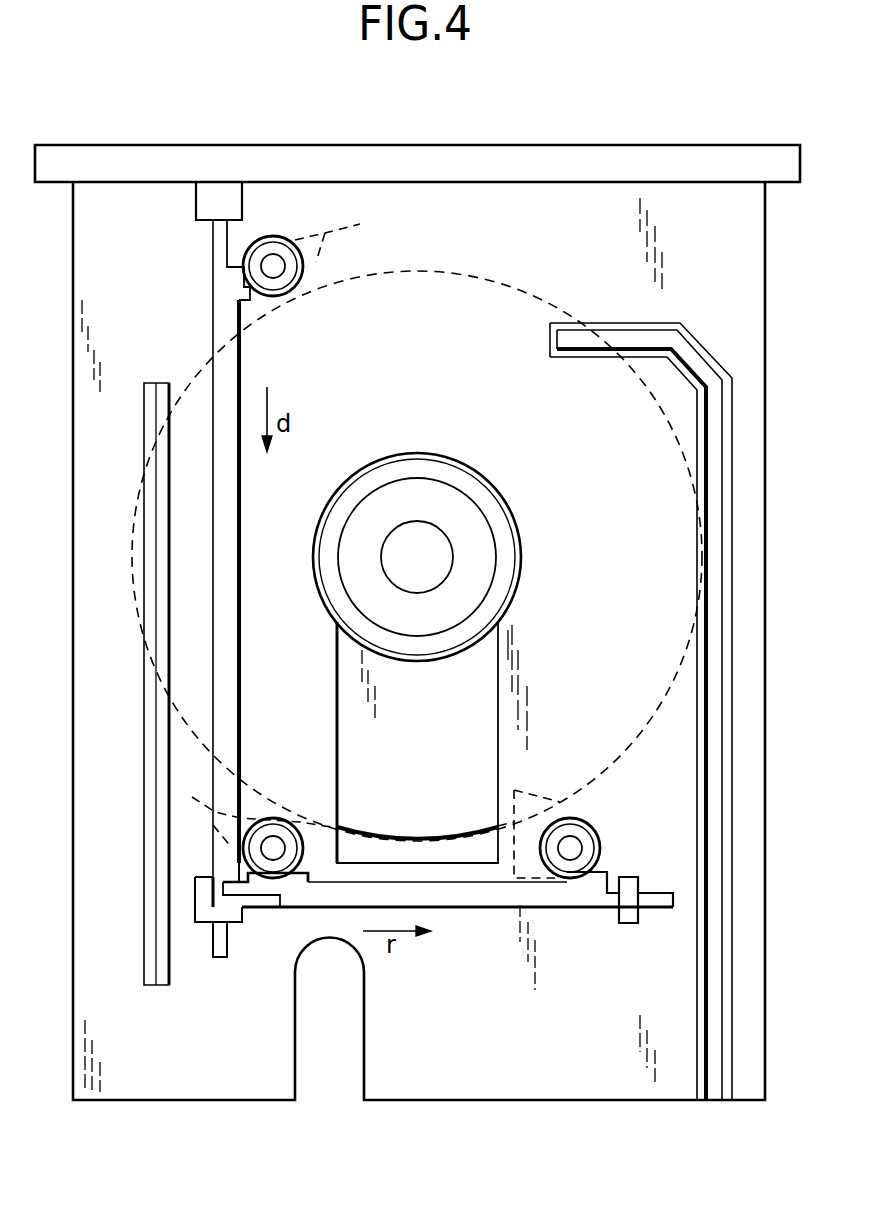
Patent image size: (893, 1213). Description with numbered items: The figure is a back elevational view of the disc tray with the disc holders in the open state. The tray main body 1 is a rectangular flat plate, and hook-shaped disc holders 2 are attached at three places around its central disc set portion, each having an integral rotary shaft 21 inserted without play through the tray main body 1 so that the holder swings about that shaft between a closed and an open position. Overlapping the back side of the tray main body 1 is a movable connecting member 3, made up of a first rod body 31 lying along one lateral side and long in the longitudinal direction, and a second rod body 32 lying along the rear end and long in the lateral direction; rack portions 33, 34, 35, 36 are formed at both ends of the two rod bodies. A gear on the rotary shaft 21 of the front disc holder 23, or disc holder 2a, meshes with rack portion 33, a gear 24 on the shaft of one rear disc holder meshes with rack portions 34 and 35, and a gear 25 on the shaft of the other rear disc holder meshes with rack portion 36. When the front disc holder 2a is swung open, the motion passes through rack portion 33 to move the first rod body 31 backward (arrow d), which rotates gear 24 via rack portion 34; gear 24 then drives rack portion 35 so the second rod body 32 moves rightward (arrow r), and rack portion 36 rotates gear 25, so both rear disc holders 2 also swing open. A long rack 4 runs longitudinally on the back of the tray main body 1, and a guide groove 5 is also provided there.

The tray main body 1 is at (766, 297).
The disc holder 2 is at (417, 544).
The disc holder 2a is at (360, 236).
The movable connecting member 3 is at (443, 608).
The long rack 4 is at (169, 557).
The guide groove 5 is at (718, 688).
The rotary shaft 21 is at (273, 262).
The disc holder 23 is at (296, 289).
The gear 24 is at (292, 826).
The gear 25 is at (560, 803).
The first rod body 31 is at (240, 640).
The second rod body 32 is at (465, 908).
The rack portion 33 is at (252, 303).
The rack portion 34 is at (245, 868).
The rack portion 35 is at (295, 878).
The rack portion 36 is at (593, 876).